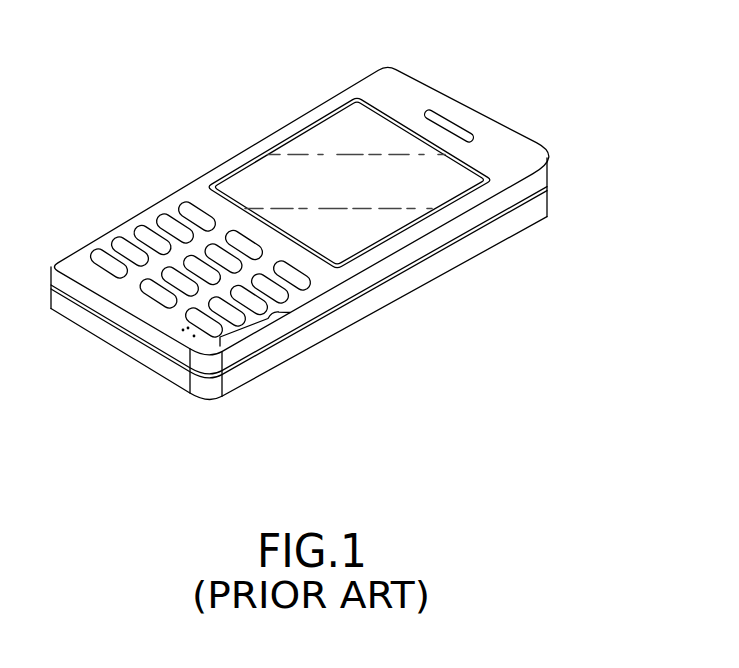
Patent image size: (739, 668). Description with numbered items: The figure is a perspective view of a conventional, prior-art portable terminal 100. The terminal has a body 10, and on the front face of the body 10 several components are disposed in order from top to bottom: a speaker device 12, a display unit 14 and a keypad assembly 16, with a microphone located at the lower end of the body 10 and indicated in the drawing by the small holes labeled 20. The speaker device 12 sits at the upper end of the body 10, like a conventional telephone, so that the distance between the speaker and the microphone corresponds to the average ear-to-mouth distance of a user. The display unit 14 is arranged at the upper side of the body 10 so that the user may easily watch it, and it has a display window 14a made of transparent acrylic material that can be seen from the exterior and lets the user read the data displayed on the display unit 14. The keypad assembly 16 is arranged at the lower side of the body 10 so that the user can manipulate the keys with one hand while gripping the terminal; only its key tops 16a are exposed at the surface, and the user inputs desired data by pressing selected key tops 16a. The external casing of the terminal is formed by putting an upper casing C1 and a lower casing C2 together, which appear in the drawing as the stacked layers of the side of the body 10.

The portable terminal 100 is at (157, 20).
The body 10 is at (206, 153).
The speaker device 12 is at (453, 128).
The display unit 14 is at (349, 173).
The display window 14a is at (318, 138).
The keypad assembly 16 is at (260, 300).
The key tops 16a is at (307, 278).
The microphone holes 20 is at (184, 332).
The upper casing C1 is at (547, 178).
The lower casing C2 is at (530, 213).